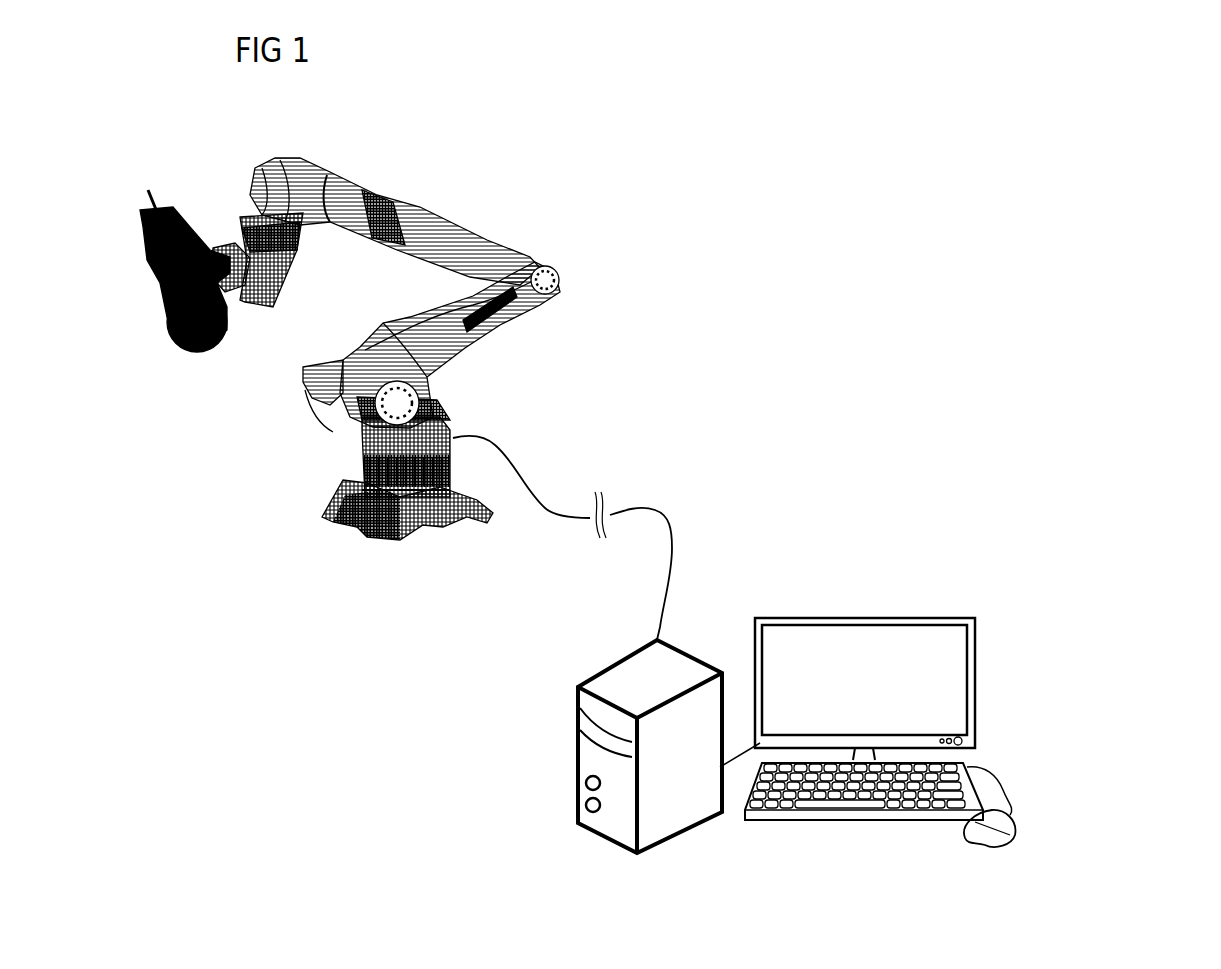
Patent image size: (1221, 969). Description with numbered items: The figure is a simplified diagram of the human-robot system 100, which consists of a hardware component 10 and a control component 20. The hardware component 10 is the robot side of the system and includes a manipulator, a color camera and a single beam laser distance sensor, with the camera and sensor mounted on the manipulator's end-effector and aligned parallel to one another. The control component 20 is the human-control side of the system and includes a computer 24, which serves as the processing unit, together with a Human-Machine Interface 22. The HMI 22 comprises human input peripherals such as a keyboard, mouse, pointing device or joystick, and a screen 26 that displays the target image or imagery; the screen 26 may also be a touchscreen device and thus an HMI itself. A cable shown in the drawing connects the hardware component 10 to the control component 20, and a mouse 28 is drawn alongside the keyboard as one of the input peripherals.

The human-robot system 100 is at (866, 215).
The hardware component 10 is at (222, 509).
The control component 20 is at (840, 533).
The Human-Machine Interface (HMI) 22 is at (1063, 733).
The computer 24 is at (578, 768).
The screen 26 is at (963, 668).
The mouse 28 is at (1020, 793).